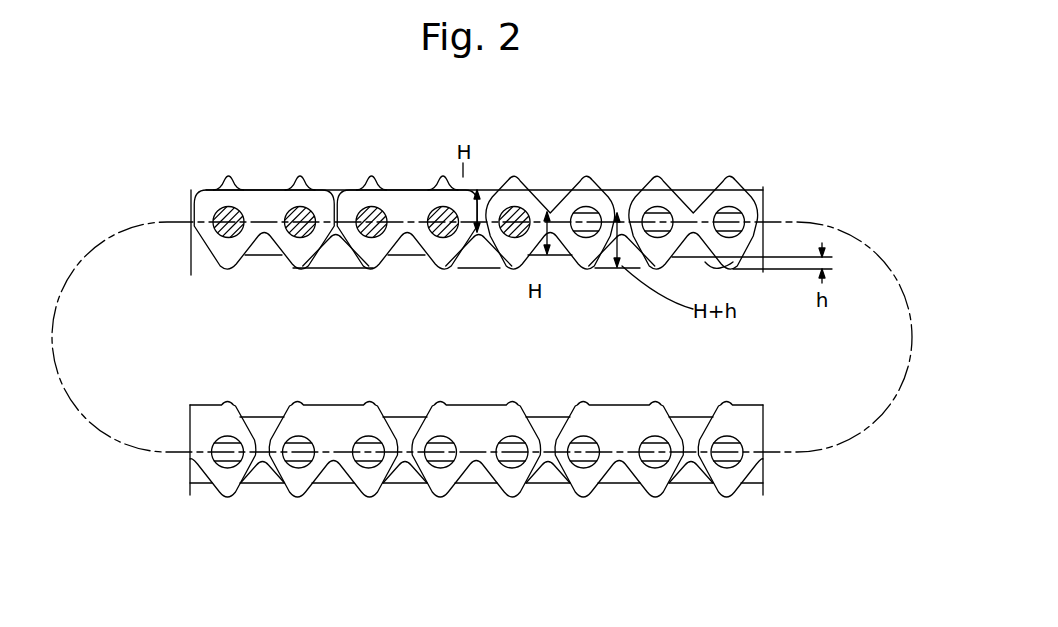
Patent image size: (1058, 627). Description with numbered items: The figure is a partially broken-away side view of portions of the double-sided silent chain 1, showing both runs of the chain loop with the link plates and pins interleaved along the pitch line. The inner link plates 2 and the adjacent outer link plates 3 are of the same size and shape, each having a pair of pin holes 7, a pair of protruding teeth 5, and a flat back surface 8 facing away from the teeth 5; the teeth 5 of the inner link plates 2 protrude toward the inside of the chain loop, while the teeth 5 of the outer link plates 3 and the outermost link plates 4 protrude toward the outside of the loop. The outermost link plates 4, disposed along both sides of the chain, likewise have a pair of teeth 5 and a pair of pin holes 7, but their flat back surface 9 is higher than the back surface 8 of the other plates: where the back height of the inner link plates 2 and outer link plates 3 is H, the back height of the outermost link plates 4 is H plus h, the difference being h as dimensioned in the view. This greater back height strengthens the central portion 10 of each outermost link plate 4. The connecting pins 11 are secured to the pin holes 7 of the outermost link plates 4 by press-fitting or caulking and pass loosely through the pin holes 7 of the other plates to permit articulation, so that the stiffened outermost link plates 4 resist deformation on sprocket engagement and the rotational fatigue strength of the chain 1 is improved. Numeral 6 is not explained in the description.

The double-sided silent chain 1 is at (641, 162).
The inner link plate 2 is at (264, 190).
The outer link plate 3 is at (407, 262).
The outermost link plate 4 is at (334, 258).
The tooth 5 is at (298, 183).
The crotch 6 is at (262, 242).
The pin hole 7 is at (220, 238).
The back surface 8 is at (404, 190).
The back surface 9 is at (634, 264).
The central portion 10 is at (332, 438).
The connecting pin 11 is at (222, 212).